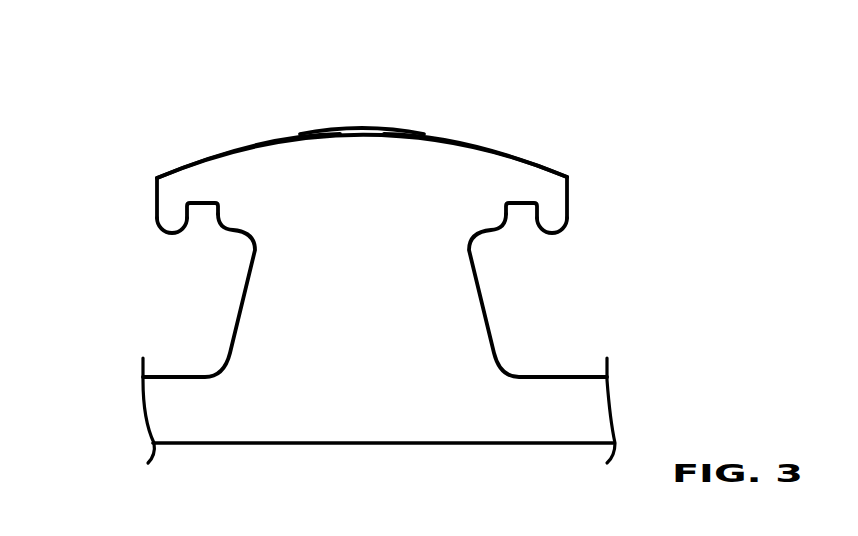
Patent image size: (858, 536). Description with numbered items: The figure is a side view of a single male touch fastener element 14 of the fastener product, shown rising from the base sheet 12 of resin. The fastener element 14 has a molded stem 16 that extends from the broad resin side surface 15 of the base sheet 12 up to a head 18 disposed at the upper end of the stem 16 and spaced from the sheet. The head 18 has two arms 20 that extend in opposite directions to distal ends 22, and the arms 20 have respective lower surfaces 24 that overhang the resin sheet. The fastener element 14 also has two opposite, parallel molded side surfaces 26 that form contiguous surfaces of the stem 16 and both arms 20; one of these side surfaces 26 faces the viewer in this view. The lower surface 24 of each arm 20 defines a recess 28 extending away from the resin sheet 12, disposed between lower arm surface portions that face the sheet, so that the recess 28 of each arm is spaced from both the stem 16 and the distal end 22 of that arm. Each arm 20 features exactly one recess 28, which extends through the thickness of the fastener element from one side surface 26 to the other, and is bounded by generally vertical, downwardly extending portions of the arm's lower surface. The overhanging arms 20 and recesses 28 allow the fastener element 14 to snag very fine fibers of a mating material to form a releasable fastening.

The base sheet 12 is at (220, 443).
The fastener element 14 is at (449, 118).
The broad resin side surface 15 is at (562, 377).
The stem 16 is at (237, 317).
The head 18 is at (340, 134).
The arm 20 is at (218, 150).
The distal end 22 is at (157, 178).
The lower surface 24 is at (204, 232).
The side surface 26 is at (366, 289).
The recess 28 is at (518, 217).